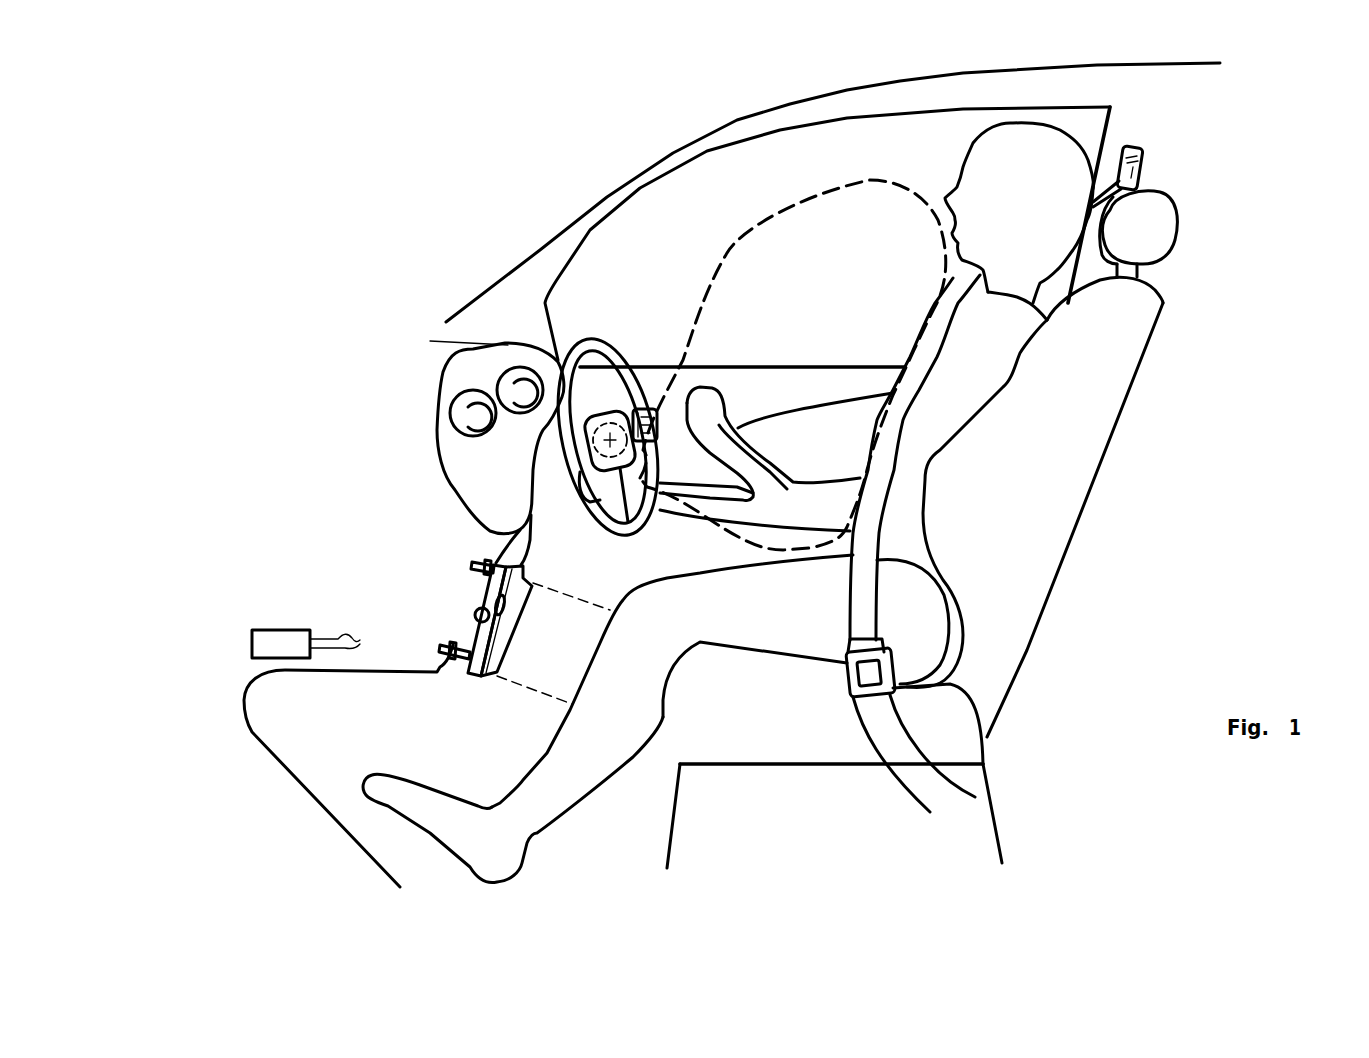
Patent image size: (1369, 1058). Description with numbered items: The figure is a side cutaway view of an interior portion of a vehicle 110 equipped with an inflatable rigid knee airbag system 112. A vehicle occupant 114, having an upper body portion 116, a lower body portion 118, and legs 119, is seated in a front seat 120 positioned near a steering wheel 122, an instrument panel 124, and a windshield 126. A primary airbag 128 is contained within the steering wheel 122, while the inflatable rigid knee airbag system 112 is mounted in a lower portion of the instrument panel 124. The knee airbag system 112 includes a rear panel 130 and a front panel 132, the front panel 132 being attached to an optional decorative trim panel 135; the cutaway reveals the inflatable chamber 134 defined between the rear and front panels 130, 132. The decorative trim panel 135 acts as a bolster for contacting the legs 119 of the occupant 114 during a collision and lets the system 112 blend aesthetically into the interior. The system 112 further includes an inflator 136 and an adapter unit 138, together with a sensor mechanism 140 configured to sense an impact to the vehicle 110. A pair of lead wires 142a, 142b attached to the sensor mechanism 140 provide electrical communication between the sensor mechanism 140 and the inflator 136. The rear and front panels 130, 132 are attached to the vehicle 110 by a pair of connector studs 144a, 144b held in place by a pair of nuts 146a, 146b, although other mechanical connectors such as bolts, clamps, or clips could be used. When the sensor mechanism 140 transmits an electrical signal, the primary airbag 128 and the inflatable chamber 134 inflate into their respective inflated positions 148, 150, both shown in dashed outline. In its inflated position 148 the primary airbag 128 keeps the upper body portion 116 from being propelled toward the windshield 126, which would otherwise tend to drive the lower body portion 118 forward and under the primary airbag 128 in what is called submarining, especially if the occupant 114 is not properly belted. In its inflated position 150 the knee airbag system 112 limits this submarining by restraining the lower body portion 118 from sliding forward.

The vehicle 110 is at (1222, 232).
The inflatable rigid knee airbag system 112 is at (482, 601).
The vehicle occupant 114 is at (1067, 153).
The upper body portion 116 is at (935, 307).
The lower body portion 118 is at (927, 645).
The legs 119 is at (633, 757).
The front seat 120 is at (1085, 502).
The steering wheel 122 is at (607, 357).
The instrument panel 124 is at (517, 503).
The windshield 126 is at (603, 207).
The primary airbag 128 is at (645, 408).
The rear panel 130 is at (529, 604).
The front panel 132 is at (537, 590).
The inflatable chamber 134 is at (520, 607).
The decorative trim panel 135 is at (505, 642).
The inflator 136 is at (482, 605).
The adapter unit 138 is at (478, 627).
The sensor mechanism 140 is at (257, 642).
The lead wire 142a is at (320, 640).
The lead wire 142b is at (320, 640).
The connector stud 144a is at (475, 566).
The connector stud 144b is at (445, 650).
The nut 146a is at (486, 562).
The nut 146b is at (452, 660).
The inflated position 148 is at (730, 250).
The inflated position 150 is at (531, 713).